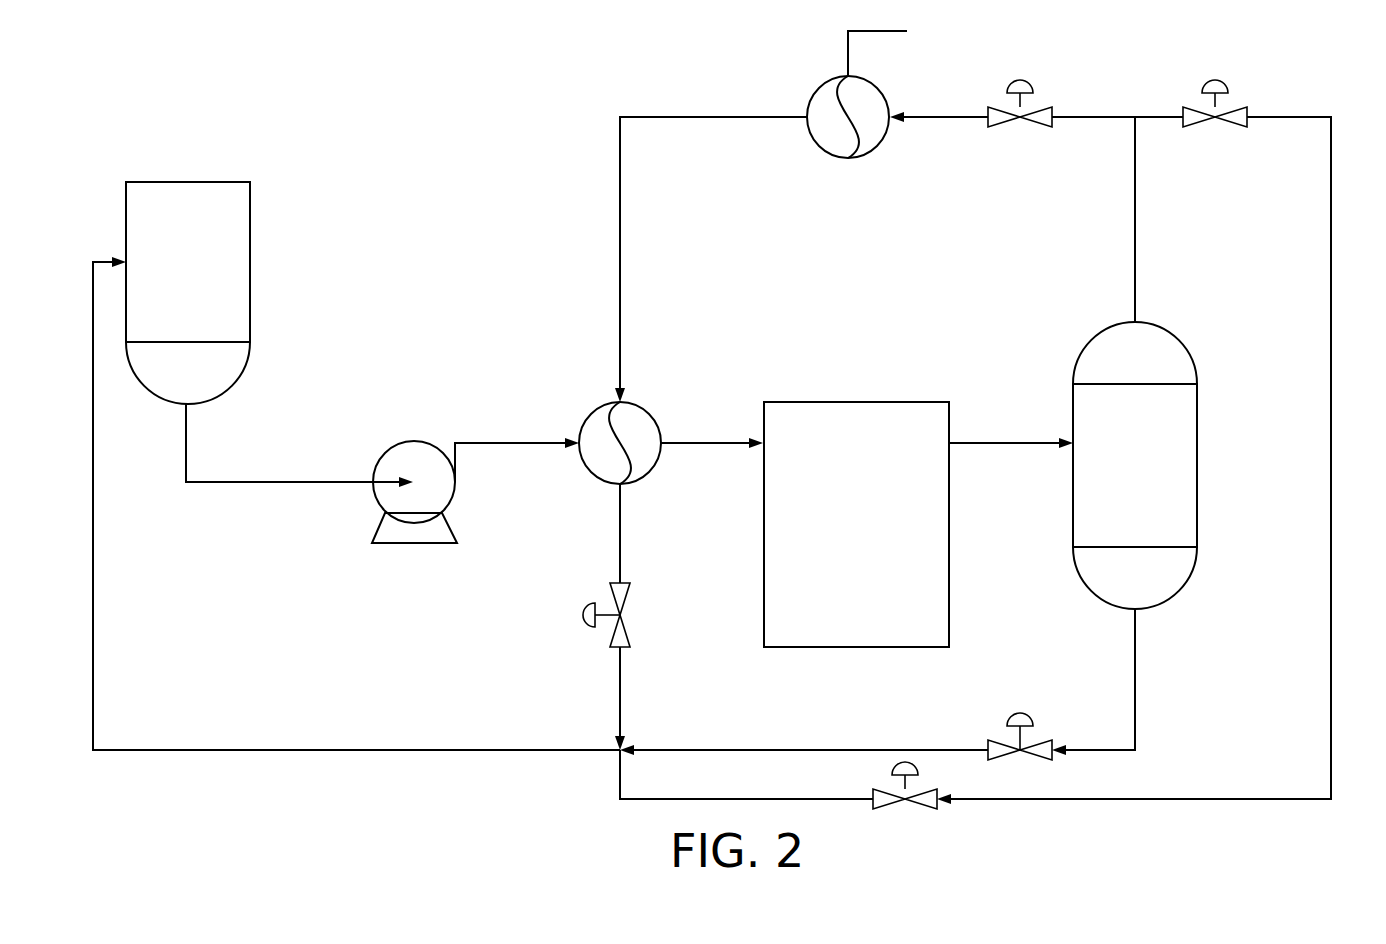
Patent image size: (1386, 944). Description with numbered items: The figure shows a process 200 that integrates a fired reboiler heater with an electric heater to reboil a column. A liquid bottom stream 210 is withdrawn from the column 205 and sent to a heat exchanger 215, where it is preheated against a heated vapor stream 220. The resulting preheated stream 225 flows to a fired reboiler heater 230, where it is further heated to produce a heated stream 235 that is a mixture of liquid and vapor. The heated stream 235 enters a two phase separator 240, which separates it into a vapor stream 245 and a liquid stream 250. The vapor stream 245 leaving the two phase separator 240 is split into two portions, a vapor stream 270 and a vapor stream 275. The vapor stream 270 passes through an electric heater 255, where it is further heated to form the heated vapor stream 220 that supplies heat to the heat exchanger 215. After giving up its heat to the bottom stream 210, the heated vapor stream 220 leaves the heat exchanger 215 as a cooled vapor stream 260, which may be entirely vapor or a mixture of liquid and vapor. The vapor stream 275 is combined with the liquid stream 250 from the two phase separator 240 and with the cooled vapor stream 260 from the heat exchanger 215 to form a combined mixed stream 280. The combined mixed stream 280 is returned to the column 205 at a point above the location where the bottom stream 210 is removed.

The process 200 is at (452, 83).
The column 205 is at (230, 182).
The bottom stream 210 is at (317, 482).
The heat exchanger 215 is at (598, 410).
The heated vapor stream 220 is at (620, 297).
The preheated stream 225 is at (713, 440).
The fired reboiler heater 230 is at (857, 402).
The heated stream 235 is at (1012, 440).
The two phase separator 240 is at (1178, 337).
The vapor stream 245 is at (1135, 219).
The liquid stream 250 is at (1135, 680).
The electric heater 255 is at (827, 80).
The cooled vapor stream 260 is at (620, 533).
The vapor stream 270 is at (1102, 115).
The vapor stream 275 is at (1332, 152).
The combined mixed stream 280 is at (482, 748).